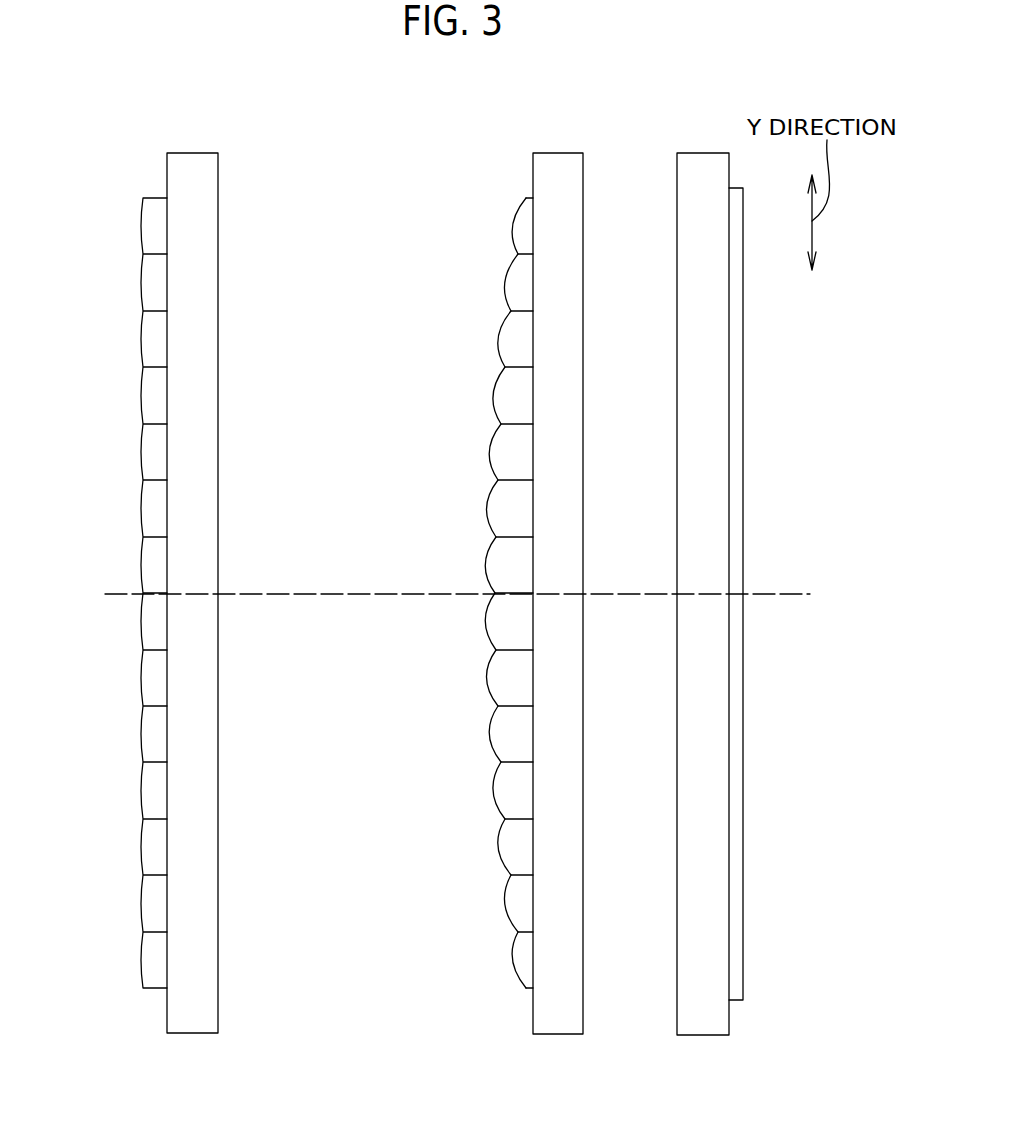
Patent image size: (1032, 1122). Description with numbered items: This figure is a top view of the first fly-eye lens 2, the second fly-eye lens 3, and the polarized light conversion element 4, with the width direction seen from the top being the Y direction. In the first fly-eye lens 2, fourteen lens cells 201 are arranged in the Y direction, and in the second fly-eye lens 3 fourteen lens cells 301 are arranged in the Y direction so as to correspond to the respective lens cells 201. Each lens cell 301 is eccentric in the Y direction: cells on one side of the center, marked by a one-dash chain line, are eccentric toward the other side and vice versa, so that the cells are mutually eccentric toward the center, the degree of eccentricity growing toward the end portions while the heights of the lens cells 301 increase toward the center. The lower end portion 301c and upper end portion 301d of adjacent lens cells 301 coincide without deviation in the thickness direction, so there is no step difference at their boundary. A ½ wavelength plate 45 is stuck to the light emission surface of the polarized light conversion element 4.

The first fly-eye lens 2 is at (200, 157).
The lens cell 201 is at (152, 960).
The second fly-eye lens 3 is at (560, 162).
The lens cell 301 is at (522, 955).
The end portion 301c is at (430, 593).
The end portion 301d is at (523, 932).
The polarized light conversion element 4 is at (702, 162).
The ½ wavelength plate 45 is at (737, 343).